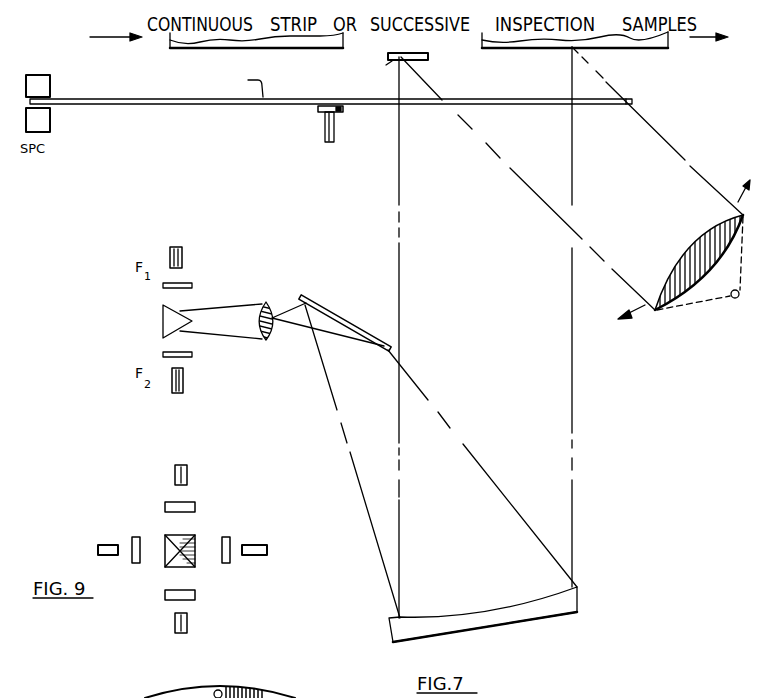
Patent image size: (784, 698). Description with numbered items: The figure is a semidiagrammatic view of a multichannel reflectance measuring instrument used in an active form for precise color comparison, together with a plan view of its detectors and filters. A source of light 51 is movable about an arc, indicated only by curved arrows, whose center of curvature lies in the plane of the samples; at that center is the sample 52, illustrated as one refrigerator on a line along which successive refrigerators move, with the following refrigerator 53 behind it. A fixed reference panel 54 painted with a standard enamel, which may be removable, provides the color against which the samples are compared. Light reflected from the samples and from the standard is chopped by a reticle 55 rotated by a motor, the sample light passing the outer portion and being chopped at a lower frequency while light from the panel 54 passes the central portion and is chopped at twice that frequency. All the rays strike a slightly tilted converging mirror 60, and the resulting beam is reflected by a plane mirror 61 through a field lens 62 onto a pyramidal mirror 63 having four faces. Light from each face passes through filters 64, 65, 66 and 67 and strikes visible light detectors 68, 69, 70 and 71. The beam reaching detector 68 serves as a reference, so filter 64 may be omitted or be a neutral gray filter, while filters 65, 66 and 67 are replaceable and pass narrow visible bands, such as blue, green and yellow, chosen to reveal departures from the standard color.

In FIG. 7, the source of light 51 is at (737, 300).
In FIG. 7, the sample 52 is at (558, 47).
In FIG. 7, the following sample 53 is at (260, 47).
In FIG. 7, the fixed reference panel 54 is at (424, 58).
In FIG. 7, the reticle 55 is at (266, 105).
In FIG. 7, the converging mirror 60 is at (578, 600).
In FIG. 7, the plane mirror 61 is at (340, 319).
In FIG. 7, the field lens 62 is at (270, 292).
In FIG. 7, the pyramidal mirror 63 is at (164, 322).
In FIG. 9, the filter 64 is at (141, 533).
In FIG. 9, the filter 65 is at (196, 507).
In FIG. 9, the filter 66 is at (233, 533).
In FIG. 9, the filter 67 is at (198, 595).
In FIG. 9, the visible light detector 68 is at (108, 545).
In FIG. 9, the visible light detector 69 is at (186, 465).
In FIG. 9, the visible light detector 70 is at (252, 545).
In FIG. 9, the visible light detector 71 is at (190, 625).